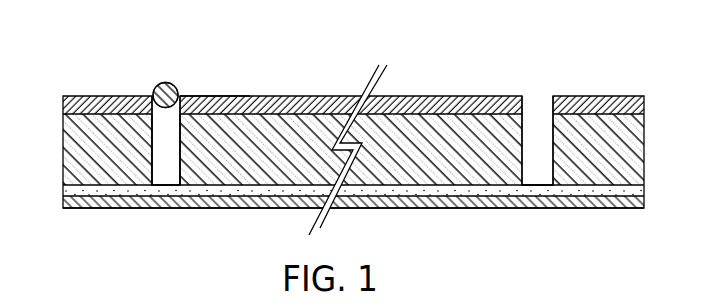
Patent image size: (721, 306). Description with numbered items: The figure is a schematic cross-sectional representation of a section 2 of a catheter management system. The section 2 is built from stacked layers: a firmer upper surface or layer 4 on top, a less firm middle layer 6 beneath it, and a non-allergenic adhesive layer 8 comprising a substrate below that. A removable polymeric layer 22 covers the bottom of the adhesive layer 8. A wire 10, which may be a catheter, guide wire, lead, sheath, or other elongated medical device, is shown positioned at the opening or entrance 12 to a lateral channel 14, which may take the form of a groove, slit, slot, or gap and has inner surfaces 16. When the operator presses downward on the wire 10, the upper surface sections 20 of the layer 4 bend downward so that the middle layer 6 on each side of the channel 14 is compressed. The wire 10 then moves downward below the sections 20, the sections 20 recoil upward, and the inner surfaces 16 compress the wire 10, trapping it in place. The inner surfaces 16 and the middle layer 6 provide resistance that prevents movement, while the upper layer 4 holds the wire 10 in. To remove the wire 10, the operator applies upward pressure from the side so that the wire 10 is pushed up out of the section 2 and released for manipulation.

The section of catheter management system 2 is at (508, 70).
The firmer upper surface or layer 4 is at (645, 107).
The less firm middle layer 6 is at (635, 152).
The non-allergenic adhesive layer 8 is at (638, 193).
The wire 10 is at (171, 84).
The opening or entrance 12 is at (143, 110).
The channel 14 is at (153, 145).
The inner surfaces 16 is at (178, 135).
The upper surface sections 20 is at (194, 104).
The removable polymeric layer 22 is at (80, 209).